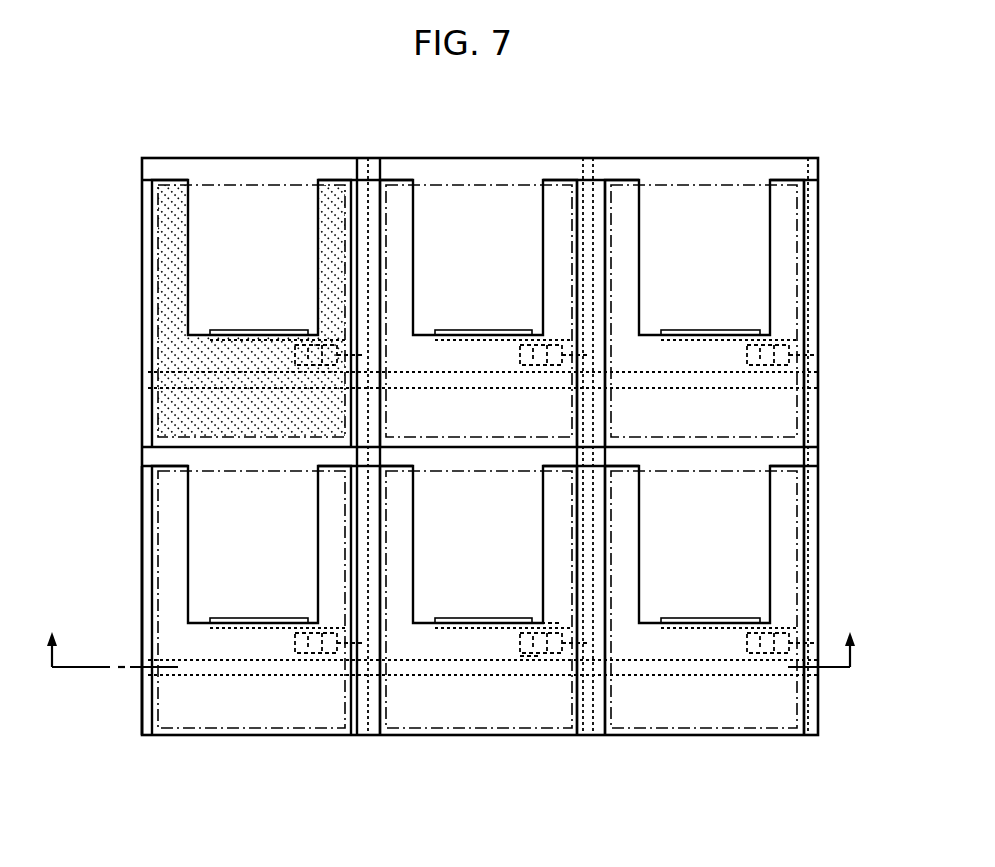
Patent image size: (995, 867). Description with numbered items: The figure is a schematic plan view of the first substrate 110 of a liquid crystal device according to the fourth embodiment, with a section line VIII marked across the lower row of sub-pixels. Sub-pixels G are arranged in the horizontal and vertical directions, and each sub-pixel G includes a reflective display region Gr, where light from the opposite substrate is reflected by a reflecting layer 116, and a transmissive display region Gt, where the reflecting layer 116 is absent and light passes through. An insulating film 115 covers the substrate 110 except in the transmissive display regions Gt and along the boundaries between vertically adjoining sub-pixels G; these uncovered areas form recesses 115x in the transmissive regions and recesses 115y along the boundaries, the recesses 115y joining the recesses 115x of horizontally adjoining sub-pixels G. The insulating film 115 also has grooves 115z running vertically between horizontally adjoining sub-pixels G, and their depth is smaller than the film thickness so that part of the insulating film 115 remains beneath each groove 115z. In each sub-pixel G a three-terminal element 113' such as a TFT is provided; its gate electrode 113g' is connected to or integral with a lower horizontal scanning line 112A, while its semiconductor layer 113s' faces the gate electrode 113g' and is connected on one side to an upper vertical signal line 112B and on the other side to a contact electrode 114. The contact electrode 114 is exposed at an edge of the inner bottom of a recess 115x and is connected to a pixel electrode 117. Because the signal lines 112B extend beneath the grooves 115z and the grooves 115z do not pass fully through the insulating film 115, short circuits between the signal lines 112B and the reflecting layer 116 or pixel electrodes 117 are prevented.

The first substrate 110 is at (476, 126).
The lower horizontal lines (scanning lines) 112A is at (244, 388).
The upper vertical lines (signal lines) 112B is at (369, 703).
The element 113' is at (527, 569).
The gate electrode 113g' is at (503, 597).
The semiconductor layer 113s' is at (510, 723).
The contact electrode 114 is at (469, 329).
The insulating film 115 is at (820, 322).
The recess 115x is at (710, 236).
The recess 115y is at (340, 168).
The groove 115z is at (375, 178).
The reflecting layer 116 is at (152, 347).
The pixel electrode 117 is at (152, 548).
The sub-pixel G is at (80, 652).
The transmissive display region Gt is at (225, 560).
The reflective display region Gr is at (200, 648).
The section line VIII- VIII is at (440, 637).